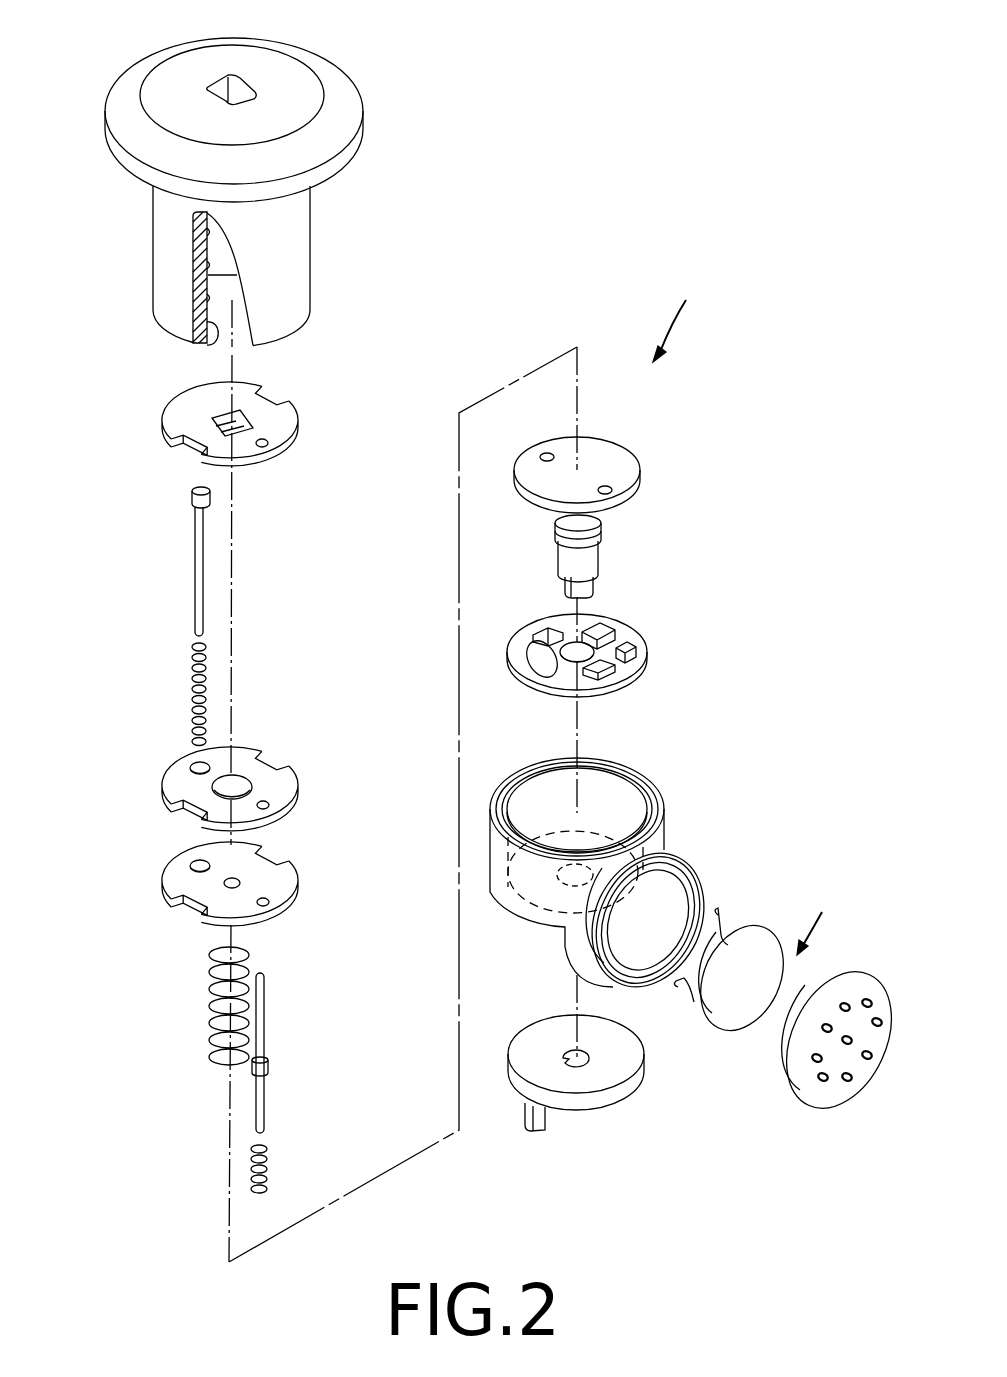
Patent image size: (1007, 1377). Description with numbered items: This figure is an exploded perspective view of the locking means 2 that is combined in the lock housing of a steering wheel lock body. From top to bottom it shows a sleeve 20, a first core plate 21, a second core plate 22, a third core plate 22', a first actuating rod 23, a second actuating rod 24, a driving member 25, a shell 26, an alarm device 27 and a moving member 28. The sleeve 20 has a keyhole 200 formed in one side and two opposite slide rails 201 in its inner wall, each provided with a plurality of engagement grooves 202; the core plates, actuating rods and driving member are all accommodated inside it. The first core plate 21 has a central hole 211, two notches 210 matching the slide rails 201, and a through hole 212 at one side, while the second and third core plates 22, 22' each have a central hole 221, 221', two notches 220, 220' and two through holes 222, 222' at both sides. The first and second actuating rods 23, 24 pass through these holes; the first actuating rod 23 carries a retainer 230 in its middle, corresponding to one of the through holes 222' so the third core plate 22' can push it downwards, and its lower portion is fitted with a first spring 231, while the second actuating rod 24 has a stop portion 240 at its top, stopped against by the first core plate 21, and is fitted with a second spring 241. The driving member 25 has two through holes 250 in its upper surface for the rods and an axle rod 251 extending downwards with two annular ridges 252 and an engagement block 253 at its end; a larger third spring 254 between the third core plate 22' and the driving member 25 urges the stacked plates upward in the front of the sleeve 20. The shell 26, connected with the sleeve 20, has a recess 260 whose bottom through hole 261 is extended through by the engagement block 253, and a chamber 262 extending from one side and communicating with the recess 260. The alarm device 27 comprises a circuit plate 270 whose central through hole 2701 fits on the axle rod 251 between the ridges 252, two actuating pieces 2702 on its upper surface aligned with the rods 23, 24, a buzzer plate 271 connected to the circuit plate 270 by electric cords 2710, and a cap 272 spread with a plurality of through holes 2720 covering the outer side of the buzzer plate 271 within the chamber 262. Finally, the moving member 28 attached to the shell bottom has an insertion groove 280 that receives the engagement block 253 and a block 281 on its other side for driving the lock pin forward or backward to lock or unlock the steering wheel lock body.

The locking means 2 is at (680, 312).
The sleeve 20 is at (167, 230).
The keyhole 200 is at (238, 90).
The slide rails 201 is at (200, 346).
The engagement grooves 202 is at (200, 265).
The first core plate 21 is at (288, 430).
The notches 210 is at (272, 395).
The central hole 211 is at (228, 422).
The through hole 212 is at (268, 444).
The second core plate 22 is at (267, 788).
The notches 220 is at (213, 759).
The central hole 221 is at (263, 732).
The through holes 222 is at (231, 768).
The third core plate 22' is at (271, 884).
The notches 220' is at (225, 879).
The central hole 221' is at (149, 864).
The through holes 222' is at (225, 875).
The first actuating rod 23 is at (265, 1027).
The retainer 230 is at (268, 1070).
The first spring 231 is at (270, 1160).
The second actuating rod 24 is at (195, 560).
The stop portion 240 is at (190, 495).
The second spring 241 is at (193, 688).
The driving member 25 is at (620, 450).
The through holes 250 is at (545, 455).
The axle rod 251 is at (585, 560).
The annular ridges 252 is at (603, 524).
The engagement block 253 is at (585, 590).
The third spring 254 is at (213, 1005).
The shell 26 is at (665, 840).
The recess 260 is at (610, 790).
The through hole 261 is at (567, 883).
The chamber 262 is at (665, 890).
The alarm device 27 is at (822, 916).
The circuit plate 270 is at (620, 630).
The through hole 2701 is at (580, 662).
The actuating pieces 2702 is at (545, 630).
The buzzer plate 271 is at (747, 1010).
The electric cords 2710 is at (720, 915).
The cap 272 is at (800, 1092).
The through holes 2720 is at (847, 1082).
The moving member 28 is at (610, 1105).
The insertion groove 280 is at (565, 1050).
The block 281 is at (548, 1120).